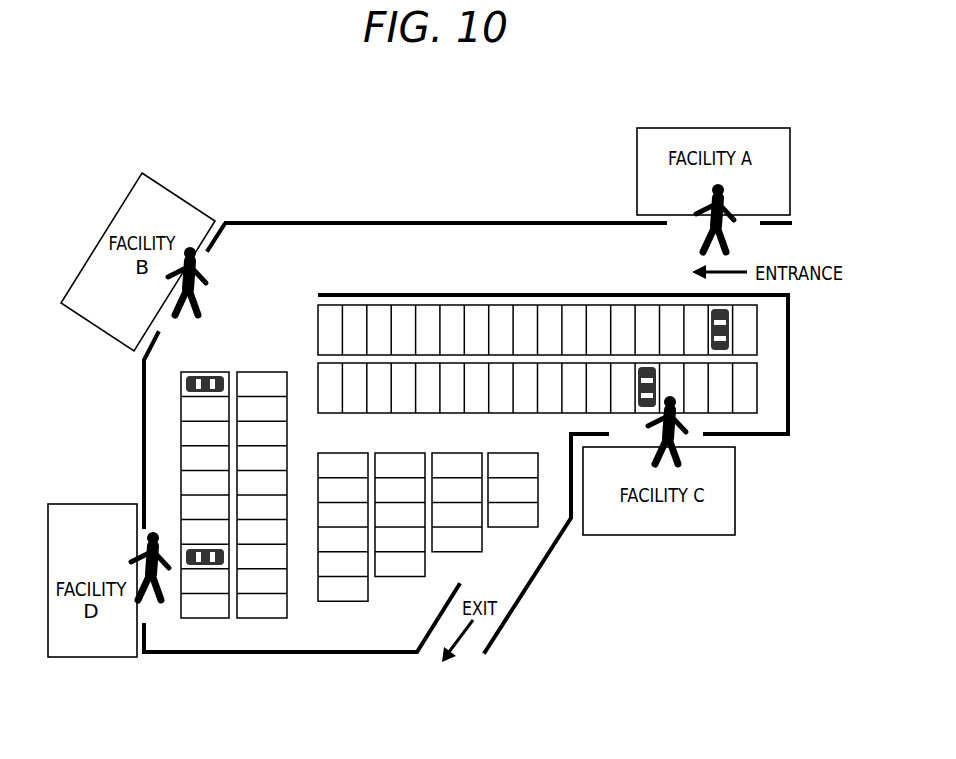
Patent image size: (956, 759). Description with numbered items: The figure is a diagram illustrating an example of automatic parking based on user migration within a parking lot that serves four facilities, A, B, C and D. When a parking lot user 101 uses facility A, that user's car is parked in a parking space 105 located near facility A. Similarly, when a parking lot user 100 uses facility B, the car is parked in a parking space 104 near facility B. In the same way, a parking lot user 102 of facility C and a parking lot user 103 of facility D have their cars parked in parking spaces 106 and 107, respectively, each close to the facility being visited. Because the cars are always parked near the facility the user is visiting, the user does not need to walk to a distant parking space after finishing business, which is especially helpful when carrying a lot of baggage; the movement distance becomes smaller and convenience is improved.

The parking lot user 100 is at (200, 264).
The parking lot user 101 is at (693, 235).
The parking lot user 102 is at (702, 422).
The parking lot user 103 is at (162, 605).
The parking space 104 is at (203, 371).
The parking space 105 is at (730, 326).
The parking space 106 is at (638, 395).
The parking space 107 is at (197, 545).